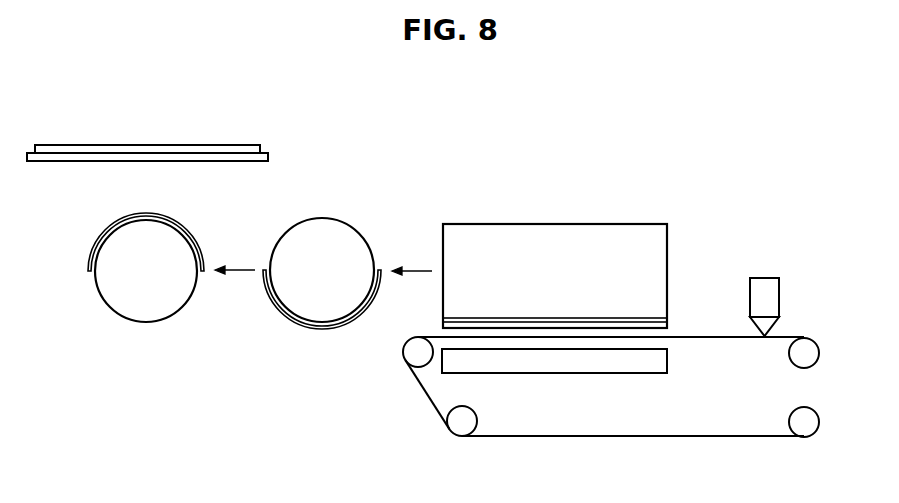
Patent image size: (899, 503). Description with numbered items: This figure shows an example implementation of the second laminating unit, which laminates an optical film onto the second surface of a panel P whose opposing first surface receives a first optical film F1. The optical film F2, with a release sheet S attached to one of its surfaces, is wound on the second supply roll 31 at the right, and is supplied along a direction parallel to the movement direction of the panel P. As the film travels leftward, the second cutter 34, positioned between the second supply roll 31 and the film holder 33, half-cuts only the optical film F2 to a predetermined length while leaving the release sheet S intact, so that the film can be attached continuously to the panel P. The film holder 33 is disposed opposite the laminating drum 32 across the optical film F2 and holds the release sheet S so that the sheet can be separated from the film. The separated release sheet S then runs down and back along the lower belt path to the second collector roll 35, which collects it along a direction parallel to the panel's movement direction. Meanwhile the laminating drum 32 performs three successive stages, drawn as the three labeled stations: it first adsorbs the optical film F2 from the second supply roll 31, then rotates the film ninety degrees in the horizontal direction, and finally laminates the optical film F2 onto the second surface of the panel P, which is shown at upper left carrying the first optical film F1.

The panel P is at (270, 157).
The optical film F1 is at (239, 145).
The optical film F2 is at (146, 219).
The laminating drum 32 is at (146, 323).
The release sheet S is at (424, 393).
The film holder 33 is at (640, 374).
The second cutter 34 is at (765, 278).
The second supply roll 31 is at (820, 353).
The second collector roll 35 is at (820, 422).